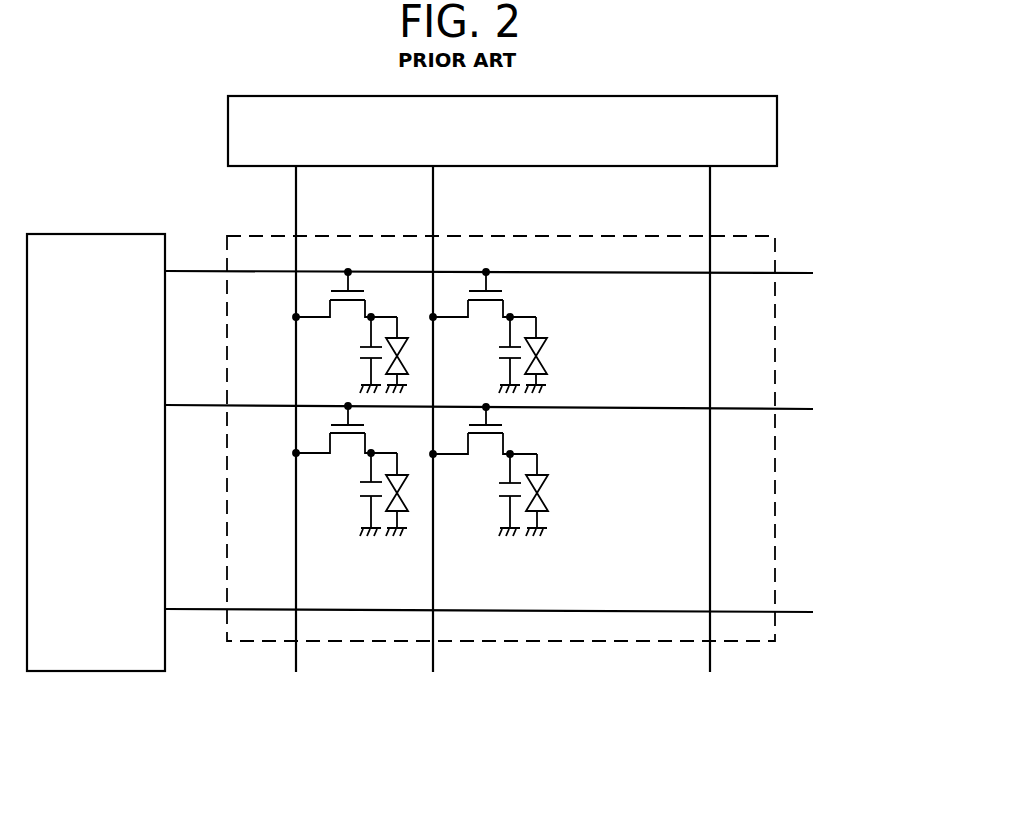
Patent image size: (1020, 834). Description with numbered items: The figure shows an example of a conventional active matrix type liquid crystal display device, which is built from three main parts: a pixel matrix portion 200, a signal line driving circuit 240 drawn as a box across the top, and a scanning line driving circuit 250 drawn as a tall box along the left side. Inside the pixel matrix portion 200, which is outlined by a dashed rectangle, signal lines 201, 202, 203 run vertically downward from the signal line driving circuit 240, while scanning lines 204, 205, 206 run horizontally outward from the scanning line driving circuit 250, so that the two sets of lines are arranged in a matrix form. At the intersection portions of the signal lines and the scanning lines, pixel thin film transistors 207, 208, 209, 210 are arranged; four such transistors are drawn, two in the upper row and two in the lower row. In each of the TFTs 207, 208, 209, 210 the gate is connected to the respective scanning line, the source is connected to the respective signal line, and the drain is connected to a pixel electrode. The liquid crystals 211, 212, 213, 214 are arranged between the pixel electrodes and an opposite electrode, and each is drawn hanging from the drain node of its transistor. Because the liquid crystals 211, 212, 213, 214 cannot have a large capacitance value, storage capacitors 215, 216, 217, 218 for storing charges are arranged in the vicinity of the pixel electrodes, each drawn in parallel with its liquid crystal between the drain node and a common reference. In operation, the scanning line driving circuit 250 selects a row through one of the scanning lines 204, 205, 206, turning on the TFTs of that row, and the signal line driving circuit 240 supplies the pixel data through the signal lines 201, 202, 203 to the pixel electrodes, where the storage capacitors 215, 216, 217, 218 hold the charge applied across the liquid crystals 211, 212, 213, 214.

The pixel matrix portion 200 is at (785, 212).
The signal line 201 is at (288, 662).
The signal line 202 is at (425, 673).
The signal line 203 is at (697, 677).
The scanning line 204 is at (813, 268).
The scanning line 205 is at (823, 398).
The scanning line 206 is at (817, 597).
The pixel thin film transistor 207 is at (370, 293).
The pixel thin film transistor 208 is at (515, 295).
The pixel thin film transistor 209 is at (325, 457).
The pixel thin film transistor 210 is at (527, 432).
The liquid crystal 211 is at (405, 320).
The liquid crystal 212 is at (560, 343).
The liquid crystal 213 is at (378, 545).
The liquid crystal 214 is at (560, 498).
The storage capacitor 215 is at (355, 367).
The storage capacitor 216 is at (502, 363).
The storage capacitor 217 is at (367, 503).
The storage capacitor 218 is at (495, 507).
The signal line driving circuit 240 is at (711, 96).
The scanning line driving circuit 250 is at (138, 672).